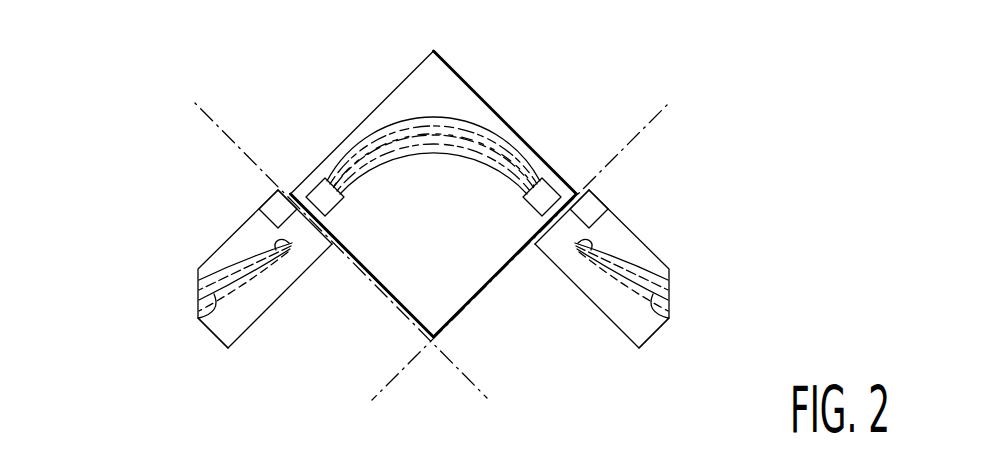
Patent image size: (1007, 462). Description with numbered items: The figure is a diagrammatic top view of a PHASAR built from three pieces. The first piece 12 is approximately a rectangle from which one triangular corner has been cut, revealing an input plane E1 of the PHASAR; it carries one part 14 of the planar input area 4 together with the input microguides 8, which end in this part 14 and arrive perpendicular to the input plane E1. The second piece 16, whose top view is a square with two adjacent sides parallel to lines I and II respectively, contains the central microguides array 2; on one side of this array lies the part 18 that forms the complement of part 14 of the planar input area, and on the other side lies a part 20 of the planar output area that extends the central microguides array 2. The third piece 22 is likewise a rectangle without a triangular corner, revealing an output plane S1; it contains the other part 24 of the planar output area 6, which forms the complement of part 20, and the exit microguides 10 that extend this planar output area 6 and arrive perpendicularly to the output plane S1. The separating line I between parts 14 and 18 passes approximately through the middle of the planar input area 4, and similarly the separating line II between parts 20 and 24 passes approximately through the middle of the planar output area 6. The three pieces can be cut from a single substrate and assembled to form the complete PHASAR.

The central microguides array 2 is at (415, 121).
The planar input area 4 is at (333, 217).
The planar output area 6 is at (534, 217).
The input microguides 8 is at (211, 330).
The exit microguides 10 is at (668, 324).
The first piece 12 is at (265, 296).
The part of the planar input area 14 is at (283, 230).
The second piece 16 is at (440, 92).
The part of the planar input area 18 is at (318, 188).
The part of the planar output area 20 is at (549, 188).
The third piece 22 is at (607, 298).
The part of the planar output area 24 is at (590, 214).
The separating line I is at (217, 121).
The separating line II is at (653, 118).
The input plane E1 is at (198, 296).
The output plane S1 is at (670, 293).